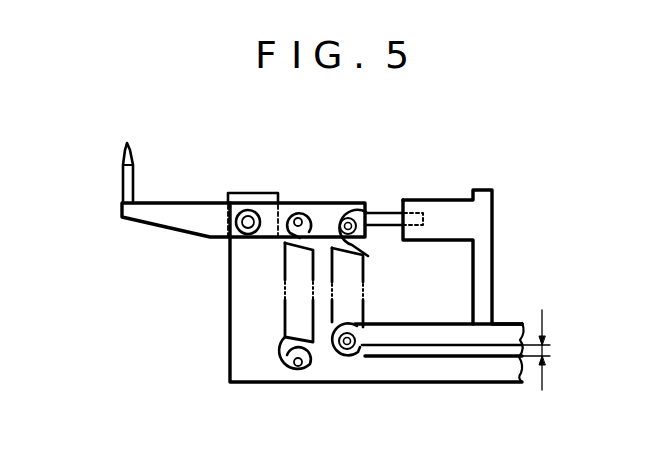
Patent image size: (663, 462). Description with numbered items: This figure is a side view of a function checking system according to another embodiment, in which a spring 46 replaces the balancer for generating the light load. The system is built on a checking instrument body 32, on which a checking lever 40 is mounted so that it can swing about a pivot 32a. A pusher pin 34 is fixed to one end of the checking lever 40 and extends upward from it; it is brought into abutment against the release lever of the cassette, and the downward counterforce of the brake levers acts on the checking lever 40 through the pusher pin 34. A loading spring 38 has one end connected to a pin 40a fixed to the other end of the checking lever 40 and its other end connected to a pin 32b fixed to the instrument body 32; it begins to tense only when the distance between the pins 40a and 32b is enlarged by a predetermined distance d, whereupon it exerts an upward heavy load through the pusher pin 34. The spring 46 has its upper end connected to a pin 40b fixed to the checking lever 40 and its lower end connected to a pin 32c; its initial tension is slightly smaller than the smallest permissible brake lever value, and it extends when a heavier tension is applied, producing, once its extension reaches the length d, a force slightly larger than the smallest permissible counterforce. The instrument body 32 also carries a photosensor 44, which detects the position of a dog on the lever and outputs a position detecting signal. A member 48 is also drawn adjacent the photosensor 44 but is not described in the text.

The checking instrument body 32 is at (253, 367).
The pivot 32a is at (240, 226).
The pin 32b is at (345, 368).
The pin 32c is at (298, 374).
The pusher pin 34 is at (131, 150).
The loading spring 38 is at (367, 313).
The checking lever 40 is at (200, 210).
The pin 40a is at (347, 214).
The pin 40b is at (300, 214).
The photosensor 44 is at (443, 230).
The spring 46 is at (283, 331).
The rod 48 is at (383, 228).
The predetermined distance d is at (544, 350).